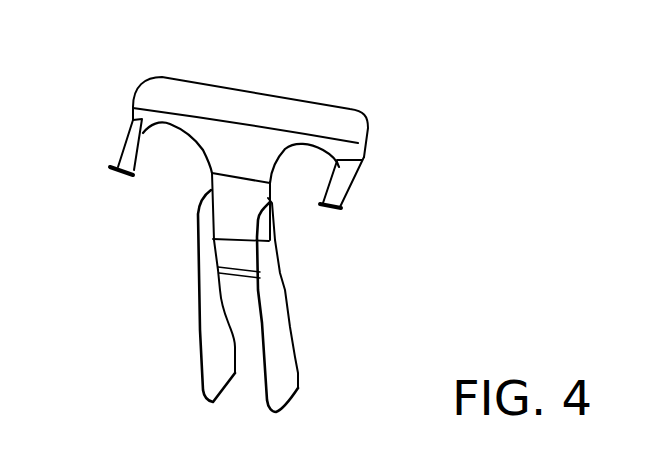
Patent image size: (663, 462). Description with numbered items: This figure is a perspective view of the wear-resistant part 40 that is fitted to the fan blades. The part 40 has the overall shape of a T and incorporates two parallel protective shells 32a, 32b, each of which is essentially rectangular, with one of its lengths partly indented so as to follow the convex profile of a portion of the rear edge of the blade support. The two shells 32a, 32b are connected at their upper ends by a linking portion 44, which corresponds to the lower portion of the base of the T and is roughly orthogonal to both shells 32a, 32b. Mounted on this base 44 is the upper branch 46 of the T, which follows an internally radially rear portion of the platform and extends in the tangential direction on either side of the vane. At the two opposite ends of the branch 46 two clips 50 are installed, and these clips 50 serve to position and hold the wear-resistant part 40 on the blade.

The wear-resistant part 40 is at (422, 67).
The upper branch 46 is at (263, 110).
The clip 50 is at (137, 138).
The linking portion 44 is at (228, 212).
The protective shell 32a is at (200, 328).
The protective shell 32b is at (283, 338).